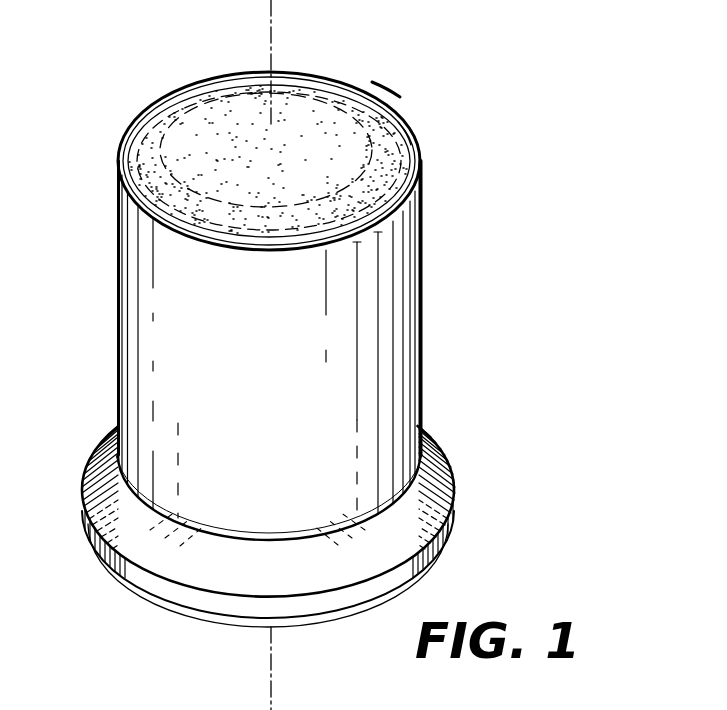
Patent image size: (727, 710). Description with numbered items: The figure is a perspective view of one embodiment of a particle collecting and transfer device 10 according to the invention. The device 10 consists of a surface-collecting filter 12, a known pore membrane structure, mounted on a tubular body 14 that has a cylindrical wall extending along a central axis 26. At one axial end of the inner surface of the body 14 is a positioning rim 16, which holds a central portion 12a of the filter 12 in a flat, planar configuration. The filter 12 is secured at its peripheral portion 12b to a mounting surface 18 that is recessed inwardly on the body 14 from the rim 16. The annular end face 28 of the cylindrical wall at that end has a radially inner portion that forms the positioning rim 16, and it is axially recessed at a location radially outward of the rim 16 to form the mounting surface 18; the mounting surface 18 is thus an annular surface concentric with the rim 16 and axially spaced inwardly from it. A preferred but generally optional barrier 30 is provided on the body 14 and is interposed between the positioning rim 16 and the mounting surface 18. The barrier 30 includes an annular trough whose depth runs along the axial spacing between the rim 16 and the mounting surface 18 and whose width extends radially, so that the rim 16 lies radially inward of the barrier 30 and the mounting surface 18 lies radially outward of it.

The particle collecting and transfer device 10 is at (397, 230).
The surface-collecting filter 12 is at (306, 113).
The central portion of the filter 12a is at (213, 113).
The peripheral portion of the filter 12b is at (167, 94).
The tubular body 14 is at (132, 327).
The positioning rim 16 is at (147, 127).
The mounting surface 18 is at (118, 166).
The axis 26 is at (273, 668).
The annular end face 28 is at (384, 106).
The barrier 30 is at (412, 144).